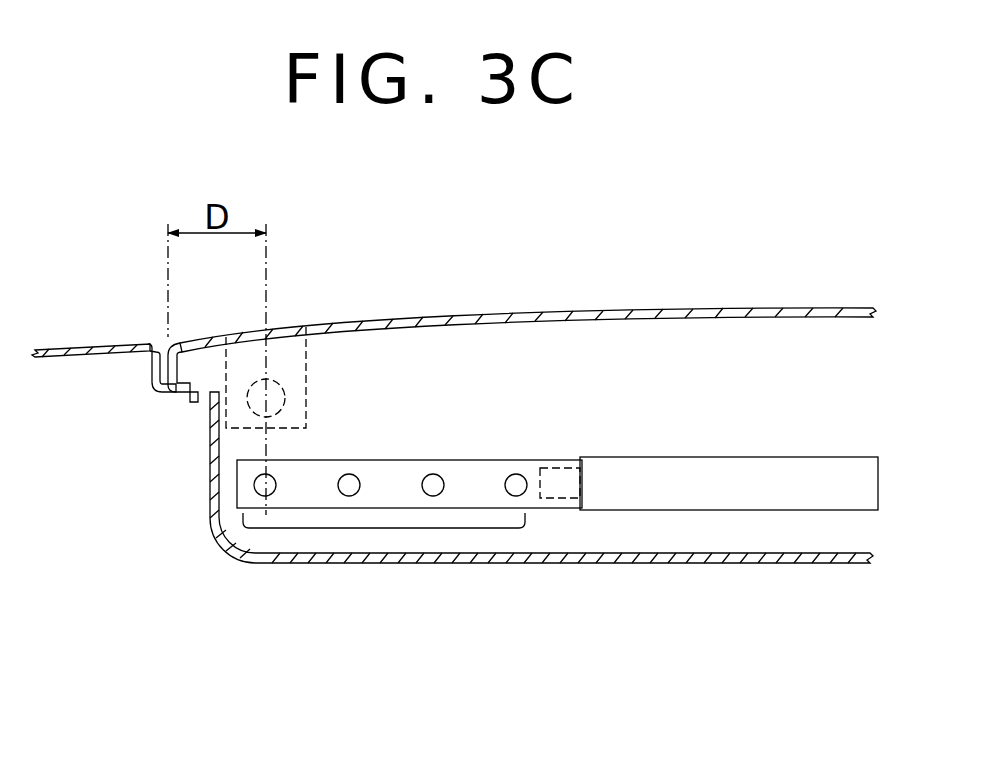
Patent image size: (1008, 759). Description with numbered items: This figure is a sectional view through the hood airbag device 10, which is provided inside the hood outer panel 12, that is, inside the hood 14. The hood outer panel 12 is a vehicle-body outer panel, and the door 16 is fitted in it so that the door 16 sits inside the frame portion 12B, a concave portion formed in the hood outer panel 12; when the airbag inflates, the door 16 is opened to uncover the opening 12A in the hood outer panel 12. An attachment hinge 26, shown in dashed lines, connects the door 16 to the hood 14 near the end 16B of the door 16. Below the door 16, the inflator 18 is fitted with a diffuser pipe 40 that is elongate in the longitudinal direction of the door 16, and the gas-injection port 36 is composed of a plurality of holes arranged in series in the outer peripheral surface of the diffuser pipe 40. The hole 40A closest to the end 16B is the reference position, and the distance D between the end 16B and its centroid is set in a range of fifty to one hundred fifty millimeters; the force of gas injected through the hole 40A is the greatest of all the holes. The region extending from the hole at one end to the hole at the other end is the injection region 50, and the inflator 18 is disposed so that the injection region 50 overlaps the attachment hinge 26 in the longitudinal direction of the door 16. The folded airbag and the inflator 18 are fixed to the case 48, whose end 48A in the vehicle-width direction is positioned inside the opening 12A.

The airbag device 10 is at (600, 280).
The hood outer panel 12 is at (70, 350).
The opening 12A is at (757, 358).
The frame portion 12B is at (148, 365).
The hood 14 is at (102, 307).
The door 16 is at (677, 307).
The end of the door 16B is at (166, 344).
The inflator 18 is at (670, 455).
The attachment hinge 26 is at (305, 373).
The gas-injection port 36 is at (349, 474).
The diffuser pipe 40 is at (473, 458).
The hole 40A is at (254, 485).
The case 48 is at (608, 565).
The end of the case 48A is at (210, 460).
The injection region 50 is at (387, 528).